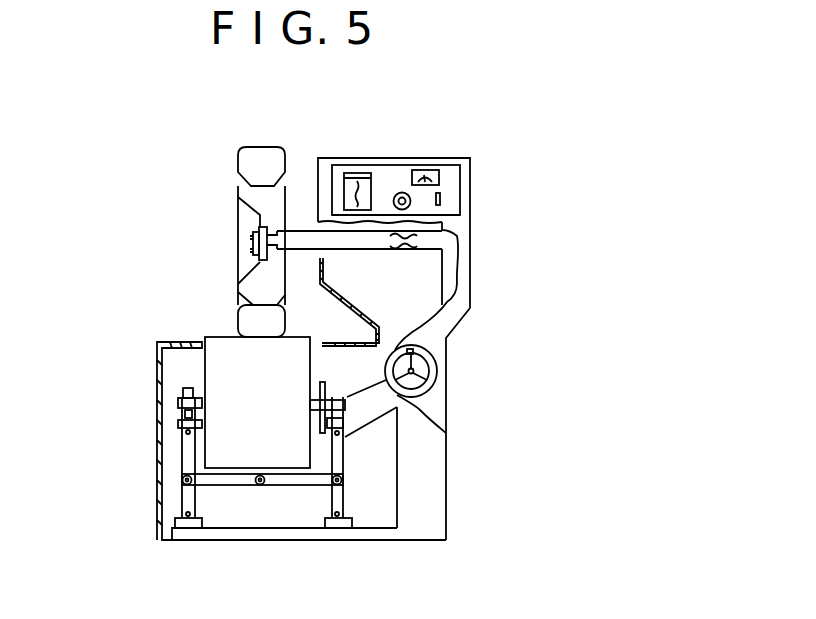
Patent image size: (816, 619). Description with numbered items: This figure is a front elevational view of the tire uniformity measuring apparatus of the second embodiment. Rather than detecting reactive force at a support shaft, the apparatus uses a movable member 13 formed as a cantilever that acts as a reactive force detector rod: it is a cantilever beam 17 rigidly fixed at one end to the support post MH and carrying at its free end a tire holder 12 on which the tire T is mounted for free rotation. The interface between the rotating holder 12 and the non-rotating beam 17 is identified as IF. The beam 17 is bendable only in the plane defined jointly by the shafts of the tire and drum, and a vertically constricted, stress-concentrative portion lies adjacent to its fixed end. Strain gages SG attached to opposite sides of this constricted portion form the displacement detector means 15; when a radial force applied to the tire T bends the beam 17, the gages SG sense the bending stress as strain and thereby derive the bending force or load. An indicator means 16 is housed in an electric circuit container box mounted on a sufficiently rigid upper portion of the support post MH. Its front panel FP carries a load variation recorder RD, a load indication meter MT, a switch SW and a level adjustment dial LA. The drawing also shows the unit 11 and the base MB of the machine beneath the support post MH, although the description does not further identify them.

The tire T is at (265, 147).
The tire holder 12 is at (252, 243).
The interface IF is at (278, 232).
The cantilever beam 17 is at (348, 250).
The strain gages SG is at (411, 252).
The movable member 13 is at (379, 255).
The indicator means 16 is at (426, 137).
The front panel FP is at (390, 172).
The load variation recorder RD is at (350, 170).
The load indication meter MT is at (443, 166).
The level adjustment dial LA is at (412, 202).
The switch SW is at (440, 199).
The displacement detector means 15 is at (472, 259).
The drive unit housing 11 is at (222, 362).
The machine base MB is at (262, 530).
The support post MH is at (423, 517).